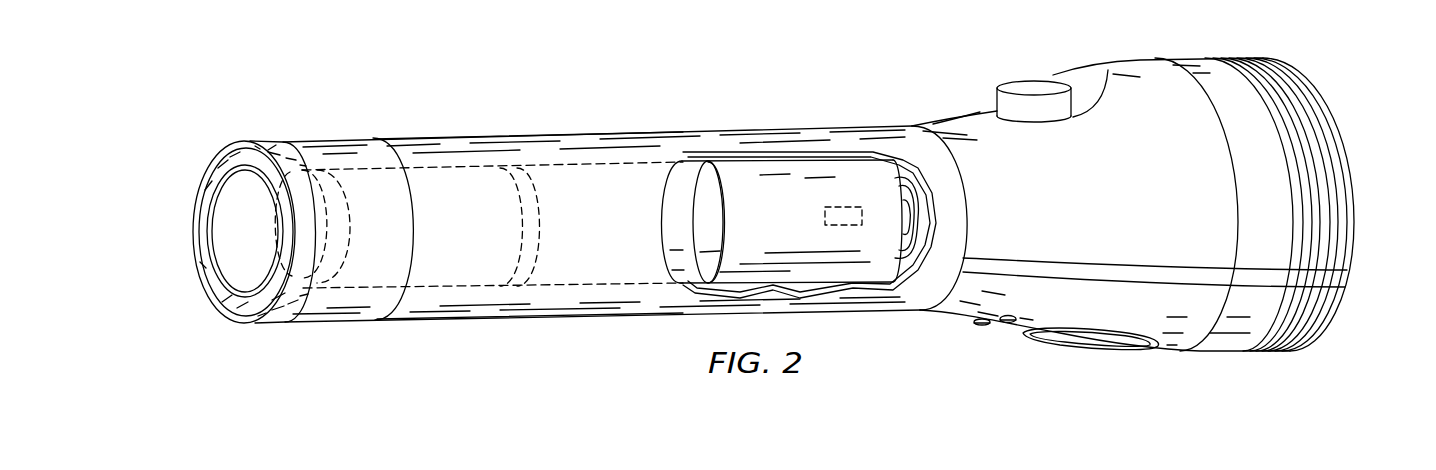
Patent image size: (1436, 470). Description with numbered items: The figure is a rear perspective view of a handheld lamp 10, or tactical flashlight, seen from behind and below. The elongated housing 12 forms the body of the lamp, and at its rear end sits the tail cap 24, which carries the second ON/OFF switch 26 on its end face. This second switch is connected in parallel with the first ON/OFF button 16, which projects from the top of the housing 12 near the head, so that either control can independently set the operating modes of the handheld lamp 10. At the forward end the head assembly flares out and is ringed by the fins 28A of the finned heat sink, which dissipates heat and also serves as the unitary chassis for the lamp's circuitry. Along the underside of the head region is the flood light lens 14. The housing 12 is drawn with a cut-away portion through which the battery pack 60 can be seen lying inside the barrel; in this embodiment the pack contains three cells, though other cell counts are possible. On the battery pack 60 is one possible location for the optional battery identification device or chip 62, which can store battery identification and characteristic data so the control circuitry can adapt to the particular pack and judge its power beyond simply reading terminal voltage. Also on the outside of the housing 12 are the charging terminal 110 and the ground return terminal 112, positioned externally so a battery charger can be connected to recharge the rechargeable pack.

The handheld lamp 10 is at (588, 98).
The housing 12 is at (467, 157).
The flood light lens 14 is at (1090, 340).
The first ON/OFF button 16 is at (1032, 87).
The tail cap 24 is at (268, 140).
The second ON/OFF switch 26 is at (253, 237).
The fins 28A is at (1233, 58).
The battery pack 60 is at (787, 190).
The battery identification device or chip 62 is at (847, 207).
The terminal 110 is at (981, 327).
The ground return terminal 112 is at (1007, 325).